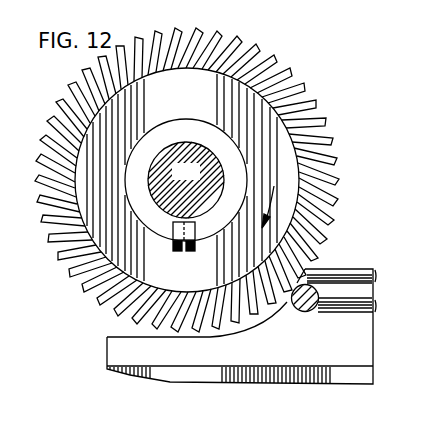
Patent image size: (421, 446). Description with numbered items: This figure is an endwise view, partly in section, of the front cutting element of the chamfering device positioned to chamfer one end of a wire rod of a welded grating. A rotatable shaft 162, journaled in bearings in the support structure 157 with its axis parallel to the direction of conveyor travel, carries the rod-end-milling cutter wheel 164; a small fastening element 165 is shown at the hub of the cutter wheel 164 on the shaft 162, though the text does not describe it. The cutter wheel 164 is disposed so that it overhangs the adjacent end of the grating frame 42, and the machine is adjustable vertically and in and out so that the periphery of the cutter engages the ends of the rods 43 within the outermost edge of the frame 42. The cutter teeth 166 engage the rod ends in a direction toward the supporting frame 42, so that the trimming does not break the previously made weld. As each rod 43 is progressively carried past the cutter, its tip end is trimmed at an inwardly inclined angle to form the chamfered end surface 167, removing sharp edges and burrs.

The rotatable shaft 162 is at (199, 180).
The cutter wheel 164 is at (277, 147).
The set screw 165 is at (198, 245).
The cutter teeth 166 is at (274, 60).
The end surface 167 is at (312, 261).
The rod 43 is at (340, 271).
The grating frame 42 is at (338, 309).
The support structure 157 is at (334, 371).